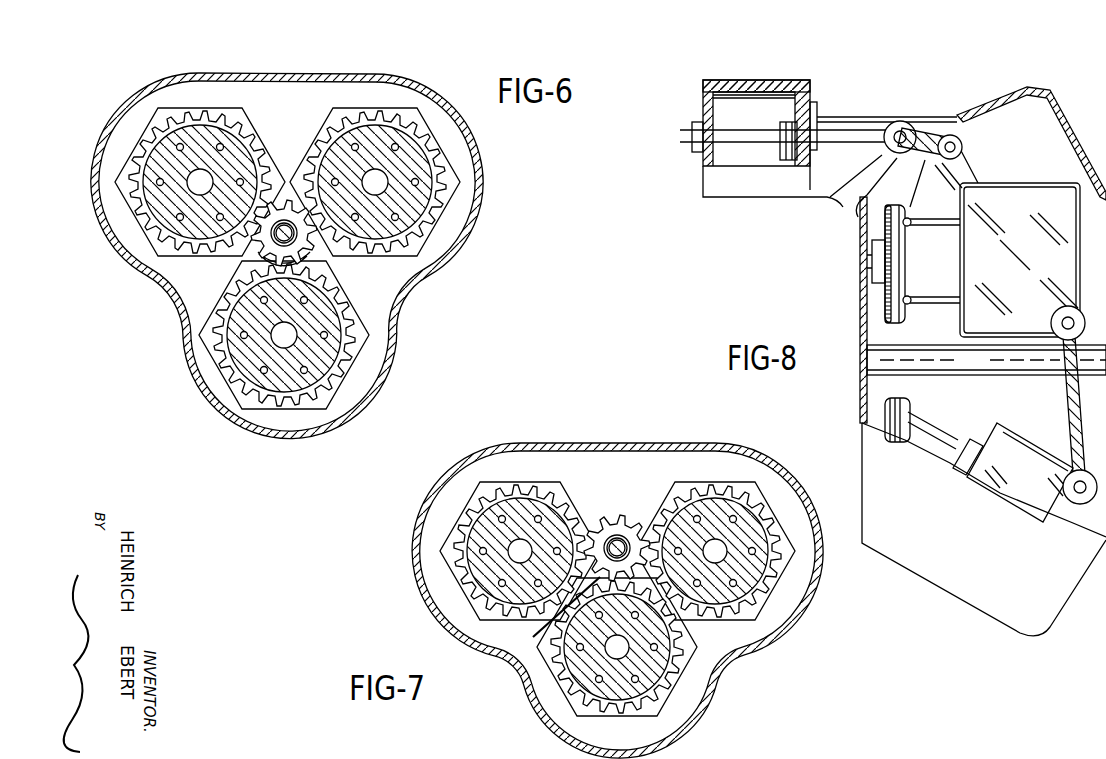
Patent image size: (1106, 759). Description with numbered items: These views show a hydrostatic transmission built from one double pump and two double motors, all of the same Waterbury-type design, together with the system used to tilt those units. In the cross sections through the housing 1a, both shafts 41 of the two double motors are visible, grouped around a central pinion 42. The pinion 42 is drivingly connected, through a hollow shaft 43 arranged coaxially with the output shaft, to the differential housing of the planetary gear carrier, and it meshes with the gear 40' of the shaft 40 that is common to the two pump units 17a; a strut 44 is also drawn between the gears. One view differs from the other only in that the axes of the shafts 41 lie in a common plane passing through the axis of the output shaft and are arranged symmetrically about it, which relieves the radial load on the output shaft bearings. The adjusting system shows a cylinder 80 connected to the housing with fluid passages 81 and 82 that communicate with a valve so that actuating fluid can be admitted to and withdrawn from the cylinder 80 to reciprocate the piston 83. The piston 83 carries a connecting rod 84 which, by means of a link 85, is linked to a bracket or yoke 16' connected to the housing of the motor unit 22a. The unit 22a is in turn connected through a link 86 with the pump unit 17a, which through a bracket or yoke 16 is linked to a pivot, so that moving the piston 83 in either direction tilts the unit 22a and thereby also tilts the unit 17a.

In FIG. 6, the housing 1a is at (404, 289).
In FIG. 7, the housing 1a is at (747, 450).
In FIG. 6, the shaft 40 is at (320, 335).
In FIG. 7, the shaft 40 is at (620, 647).
In FIG. 6, the gear 40' is at (311, 341).
In FIG. 7, the gear 40' is at (654, 647).
In FIG. 6, the shafts 41 is at (413, 197).
In FIG. 7, the shafts 41 is at (758, 515).
In FIG. 6, the pinion 42 is at (320, 258).
In FIG. 7, the pinion 42 is at (630, 513).
In FIG. 6, the hollow shaft 43 is at (284, 220).
In FIG. 7, the hollow shaft 43 is at (603, 533).
In FIG. 6, the spacer strut 44 is at (272, 259).
In FIG. 7, the spacer strut 44 is at (554, 617).
In FIG. 8, the cylinder 80 is at (728, 155).
In FIG. 8, the fluid passage 81 is at (717, 80).
In FIG. 8, the fluid passage 82 is at (795, 80).
In FIG. 8, the piston 83 is at (786, 162).
In FIG. 8, the connecting rod 84 is at (870, 130).
In FIG. 8, the link 85 is at (940, 128).
In FIG. 8, the link 86 is at (1068, 403).
In FIG. 8, the bracket or yoke 16 is at (934, 432).
In FIG. 8, the bracket or yoke 16' is at (1020, 246).
In FIG. 8, the pump unit 17a is at (1022, 484).
In FIG. 8, the motor unit 22a is at (1040, 320).